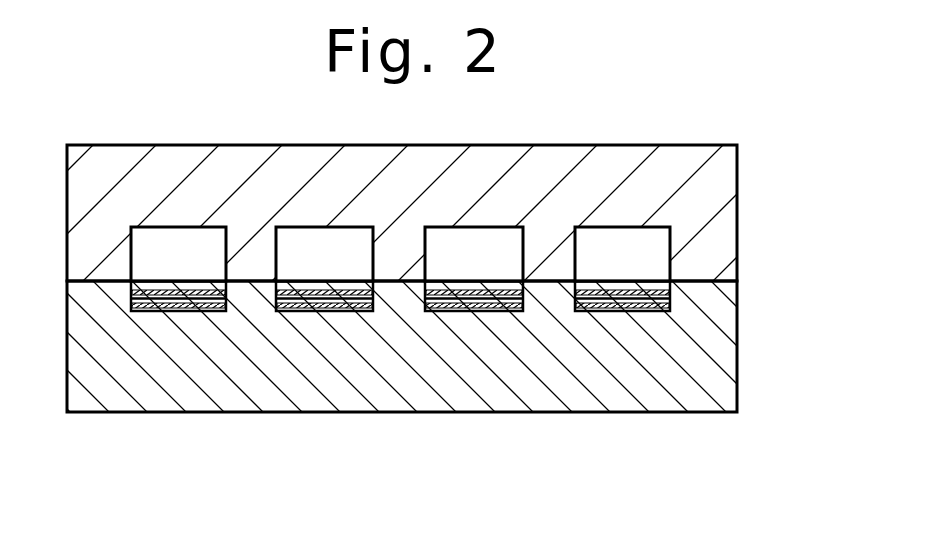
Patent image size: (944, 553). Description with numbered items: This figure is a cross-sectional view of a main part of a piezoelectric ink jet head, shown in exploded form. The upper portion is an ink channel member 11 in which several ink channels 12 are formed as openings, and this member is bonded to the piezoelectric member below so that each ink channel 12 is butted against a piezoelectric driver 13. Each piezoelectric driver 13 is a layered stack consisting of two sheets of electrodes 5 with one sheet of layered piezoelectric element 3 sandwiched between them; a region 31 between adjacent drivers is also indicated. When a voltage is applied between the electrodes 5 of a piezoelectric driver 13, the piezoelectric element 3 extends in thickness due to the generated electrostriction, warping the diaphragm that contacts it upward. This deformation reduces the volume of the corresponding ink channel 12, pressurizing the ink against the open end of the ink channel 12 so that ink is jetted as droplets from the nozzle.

The ink channel member 11 is at (722, 190).
The piezoelectric element 3 is at (723, 340).
The ink channel 12 is at (587, 233).
The electrode 5 is at (497, 300).
The substrate region between laminates 31 is at (398, 299).
The piezoelectric driver 13 is at (567, 301).